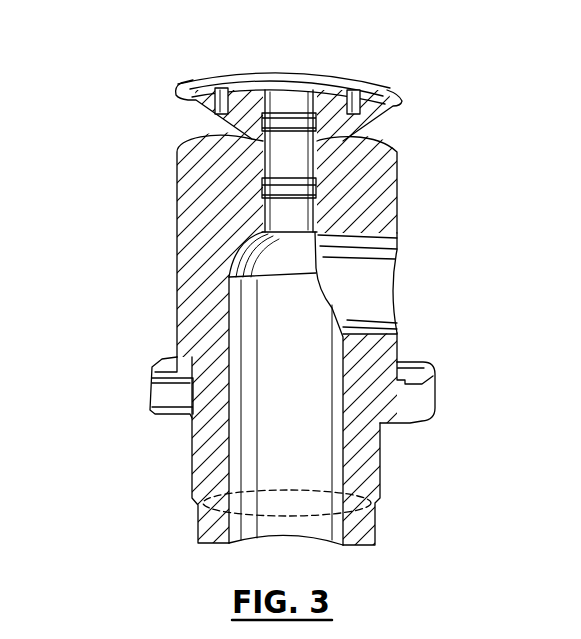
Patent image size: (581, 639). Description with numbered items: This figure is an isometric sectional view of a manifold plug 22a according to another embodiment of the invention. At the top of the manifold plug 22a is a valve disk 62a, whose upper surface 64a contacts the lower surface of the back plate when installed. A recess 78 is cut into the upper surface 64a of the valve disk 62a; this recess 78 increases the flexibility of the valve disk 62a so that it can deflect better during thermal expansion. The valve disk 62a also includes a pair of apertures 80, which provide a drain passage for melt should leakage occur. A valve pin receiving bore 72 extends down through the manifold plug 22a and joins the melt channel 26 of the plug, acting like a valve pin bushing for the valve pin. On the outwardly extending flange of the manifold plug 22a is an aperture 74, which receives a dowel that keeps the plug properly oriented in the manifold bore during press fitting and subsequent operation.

The manifold plug 22a is at (170, 237).
The melt channel 26 is at (266, 380).
The valve disk 62a is at (408, 103).
The upper surface 64a is at (177, 84).
The valve pin receiving bore 72 is at (302, 160).
The aperture 74 is at (152, 390).
The recess 78 is at (380, 80).
The apertures 80 is at (216, 90).